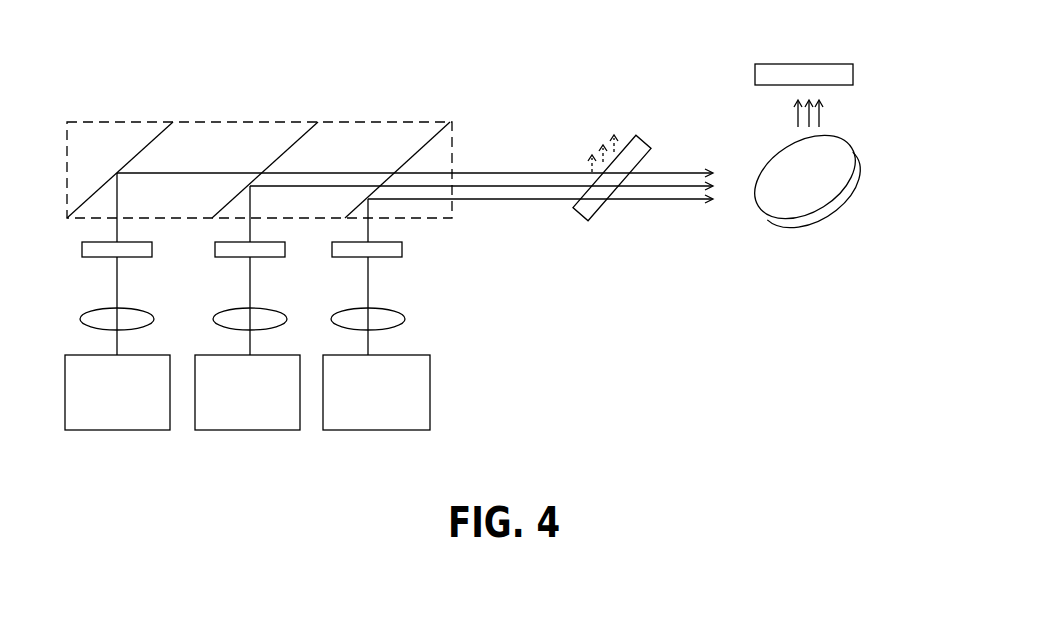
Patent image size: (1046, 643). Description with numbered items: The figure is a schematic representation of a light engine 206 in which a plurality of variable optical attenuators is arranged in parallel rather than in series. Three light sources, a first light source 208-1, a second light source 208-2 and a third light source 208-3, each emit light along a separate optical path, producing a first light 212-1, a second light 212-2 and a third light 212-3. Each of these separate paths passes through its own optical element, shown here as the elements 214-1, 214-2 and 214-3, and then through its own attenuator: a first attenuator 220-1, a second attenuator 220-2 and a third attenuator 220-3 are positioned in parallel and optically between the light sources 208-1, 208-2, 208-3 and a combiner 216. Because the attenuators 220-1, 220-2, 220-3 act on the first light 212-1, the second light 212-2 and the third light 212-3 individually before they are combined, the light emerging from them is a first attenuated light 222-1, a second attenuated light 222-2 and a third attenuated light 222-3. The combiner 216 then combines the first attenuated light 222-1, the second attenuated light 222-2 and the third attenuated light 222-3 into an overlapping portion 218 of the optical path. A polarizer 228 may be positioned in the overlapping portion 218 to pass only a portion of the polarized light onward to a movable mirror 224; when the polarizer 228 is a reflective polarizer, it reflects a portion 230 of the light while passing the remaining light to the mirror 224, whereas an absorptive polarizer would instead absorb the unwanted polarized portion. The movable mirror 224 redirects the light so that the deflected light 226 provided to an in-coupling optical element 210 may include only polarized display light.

The light engine 206 is at (550, 77).
The first light source 208-1 is at (144, 404).
The second light source 208-2 is at (274, 404).
The third light source 208-3 is at (403, 404).
The in-coupling optical element 210 is at (838, 64).
The first light 212-1 is at (117, 272).
The second light 212-2 is at (251, 295).
The third light 212-3 is at (369, 285).
The first lens 214-1 is at (97, 311).
The second lens 214-2 is at (248, 309).
The third lens 214-3 is at (404, 318).
The combiner 216 is at (350, 122).
The overlapping portion 218 is at (492, 161).
The first attenuator 220-1 is at (148, 257).
The second attenuator 220-2 is at (268, 257).
The third attenuator 220-3 is at (402, 250).
The first attenuated light 222-1 is at (118, 228).
The second attenuated light 222-2 is at (251, 233).
The third attenuated light 222-3 is at (369, 226).
The movable mirror 224 is at (832, 207).
The deflected light 226 is at (822, 113).
The polarizer 228 is at (602, 216).
The reflected portion 230 is at (624, 142).